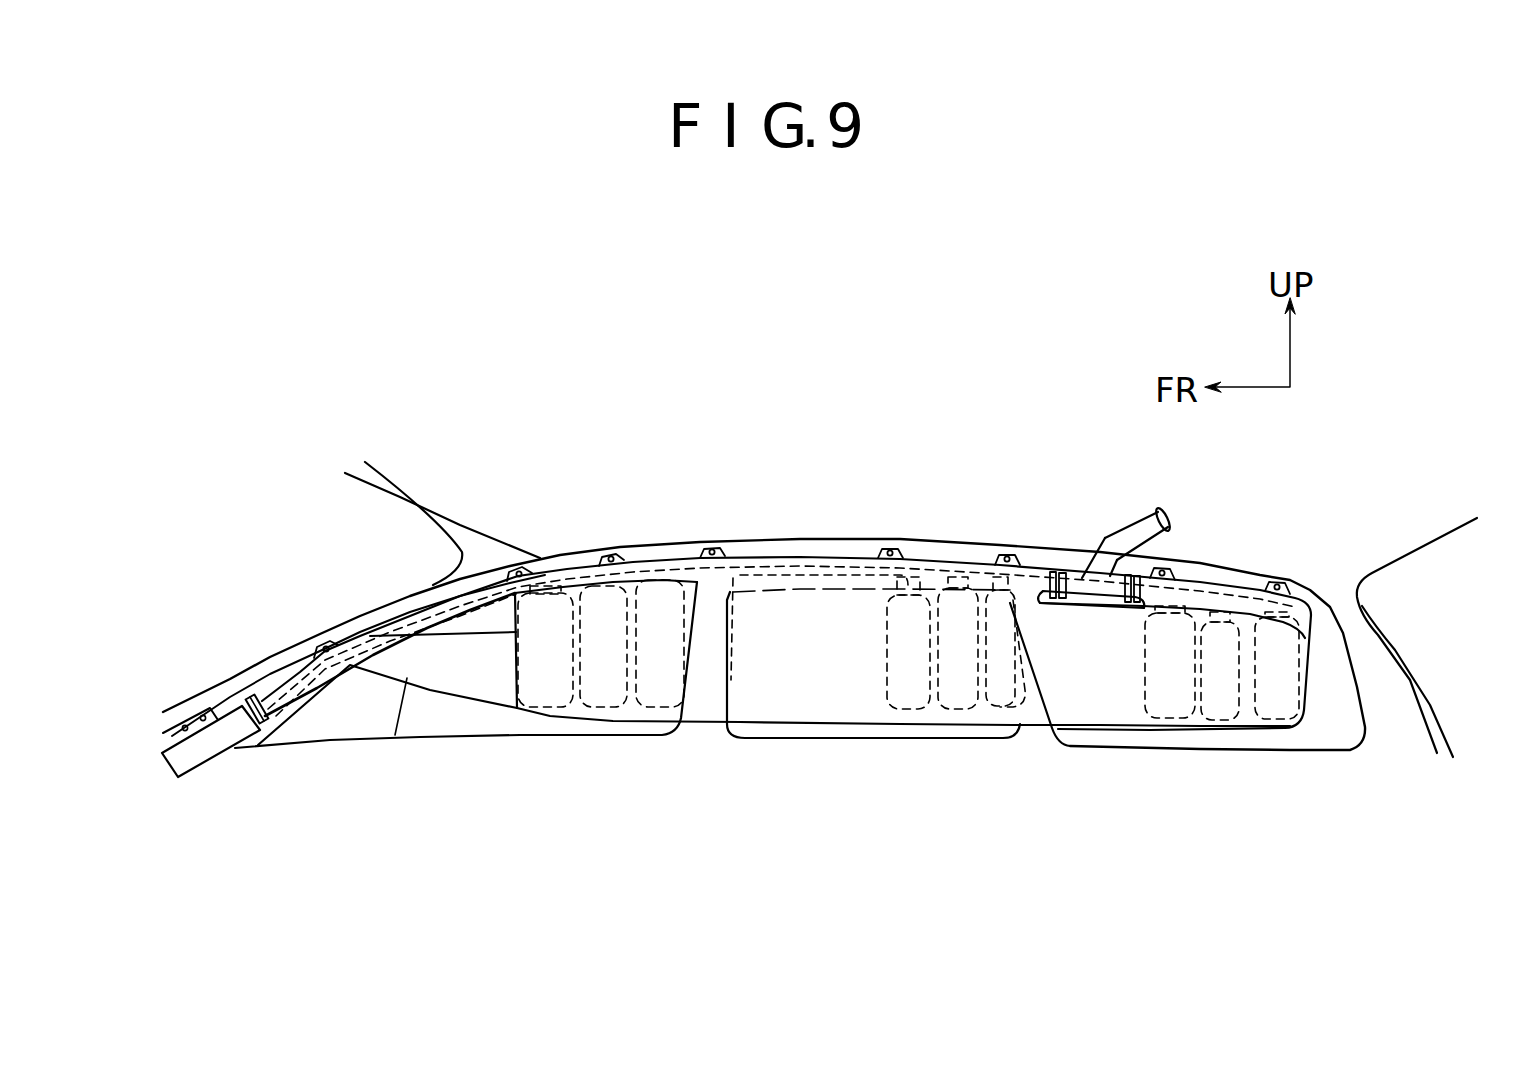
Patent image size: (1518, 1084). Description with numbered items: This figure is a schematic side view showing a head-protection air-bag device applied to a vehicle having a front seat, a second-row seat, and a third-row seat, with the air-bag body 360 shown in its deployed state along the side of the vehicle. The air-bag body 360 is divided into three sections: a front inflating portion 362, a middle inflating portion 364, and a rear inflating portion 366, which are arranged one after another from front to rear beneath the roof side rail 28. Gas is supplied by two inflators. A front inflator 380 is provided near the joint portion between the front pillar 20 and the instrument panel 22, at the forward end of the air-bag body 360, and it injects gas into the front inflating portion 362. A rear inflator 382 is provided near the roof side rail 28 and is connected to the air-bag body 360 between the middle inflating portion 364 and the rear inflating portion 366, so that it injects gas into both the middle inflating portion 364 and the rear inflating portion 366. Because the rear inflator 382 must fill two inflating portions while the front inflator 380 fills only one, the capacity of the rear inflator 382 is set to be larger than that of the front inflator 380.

The front pillar 20 is at (363, 612).
The instrument panel 22 is at (258, 745).
The roof side rail 28 is at (912, 538).
The air-bag body 360 is at (810, 551).
The front inflating portion 362 is at (652, 692).
The middle inflating portion 364 is at (912, 697).
The rear inflating portion 366 is at (1170, 703).
The front inflator 380 is at (210, 757).
The rear inflator 382 is at (1128, 518).